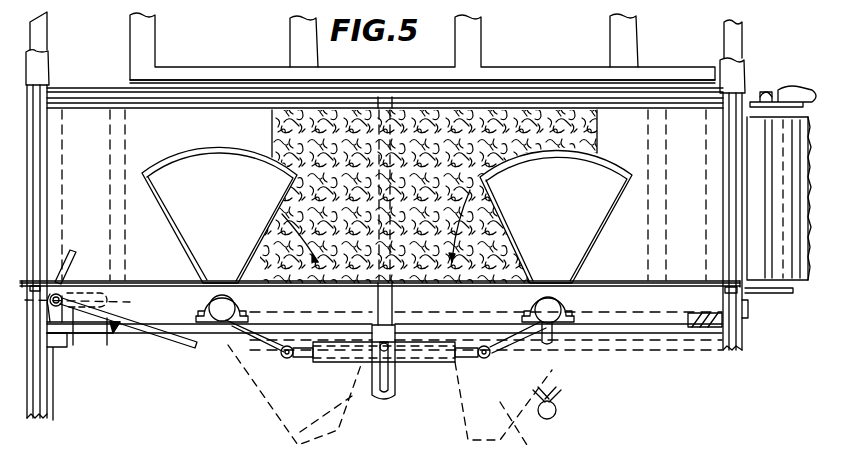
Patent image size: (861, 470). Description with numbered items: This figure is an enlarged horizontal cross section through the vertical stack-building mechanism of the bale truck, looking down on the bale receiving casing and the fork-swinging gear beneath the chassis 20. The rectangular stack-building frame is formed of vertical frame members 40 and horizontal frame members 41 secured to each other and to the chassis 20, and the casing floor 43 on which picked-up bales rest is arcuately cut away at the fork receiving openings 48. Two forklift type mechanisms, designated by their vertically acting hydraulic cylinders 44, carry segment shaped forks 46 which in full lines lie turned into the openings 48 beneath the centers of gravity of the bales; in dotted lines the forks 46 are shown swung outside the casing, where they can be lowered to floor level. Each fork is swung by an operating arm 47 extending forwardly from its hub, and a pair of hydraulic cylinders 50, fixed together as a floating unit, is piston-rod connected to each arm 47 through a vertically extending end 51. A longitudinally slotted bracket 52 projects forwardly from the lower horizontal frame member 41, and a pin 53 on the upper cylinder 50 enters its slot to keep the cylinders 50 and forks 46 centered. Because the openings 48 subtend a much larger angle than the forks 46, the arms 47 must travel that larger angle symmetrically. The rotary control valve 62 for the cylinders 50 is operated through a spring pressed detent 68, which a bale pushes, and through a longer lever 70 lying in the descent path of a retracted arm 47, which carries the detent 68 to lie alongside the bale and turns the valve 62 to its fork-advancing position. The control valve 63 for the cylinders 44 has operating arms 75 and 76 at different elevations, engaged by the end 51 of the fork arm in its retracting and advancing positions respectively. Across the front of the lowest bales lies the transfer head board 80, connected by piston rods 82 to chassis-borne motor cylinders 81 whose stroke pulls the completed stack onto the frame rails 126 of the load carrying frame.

The chassis 20 is at (740, 318).
The vertical frame members 40 is at (73, 338).
The horizontal frame members 41 is at (658, 334).
The floor 43 is at (250, 138).
The hydraulic cylinders 44 is at (214, 310).
The segment shaped forks 46 is at (230, 207).
The operating arm 47 is at (262, 338).
The arcuate fork receiving openings 48 is at (205, 150).
The hydraulic cylinders 50 is at (343, 362).
The vertically extending end 51 is at (486, 356).
The longitudinally slotted bracket 52 is at (394, 400).
The pin 53 is at (390, 342).
The three-way rotary control valve 62 is at (55, 345).
The three-way control valve 63 is at (558, 416).
The spring pressed detent 68 is at (70, 268).
The lever 70 is at (108, 320).
The operating arm 75 is at (556, 392).
The operating arm 76 is at (538, 402).
The head board 80 is at (145, 281).
The motor cylinders 81 is at (40, 66).
The piston rods 82 is at (37, 184).
The frame rails 126 is at (483, 46).